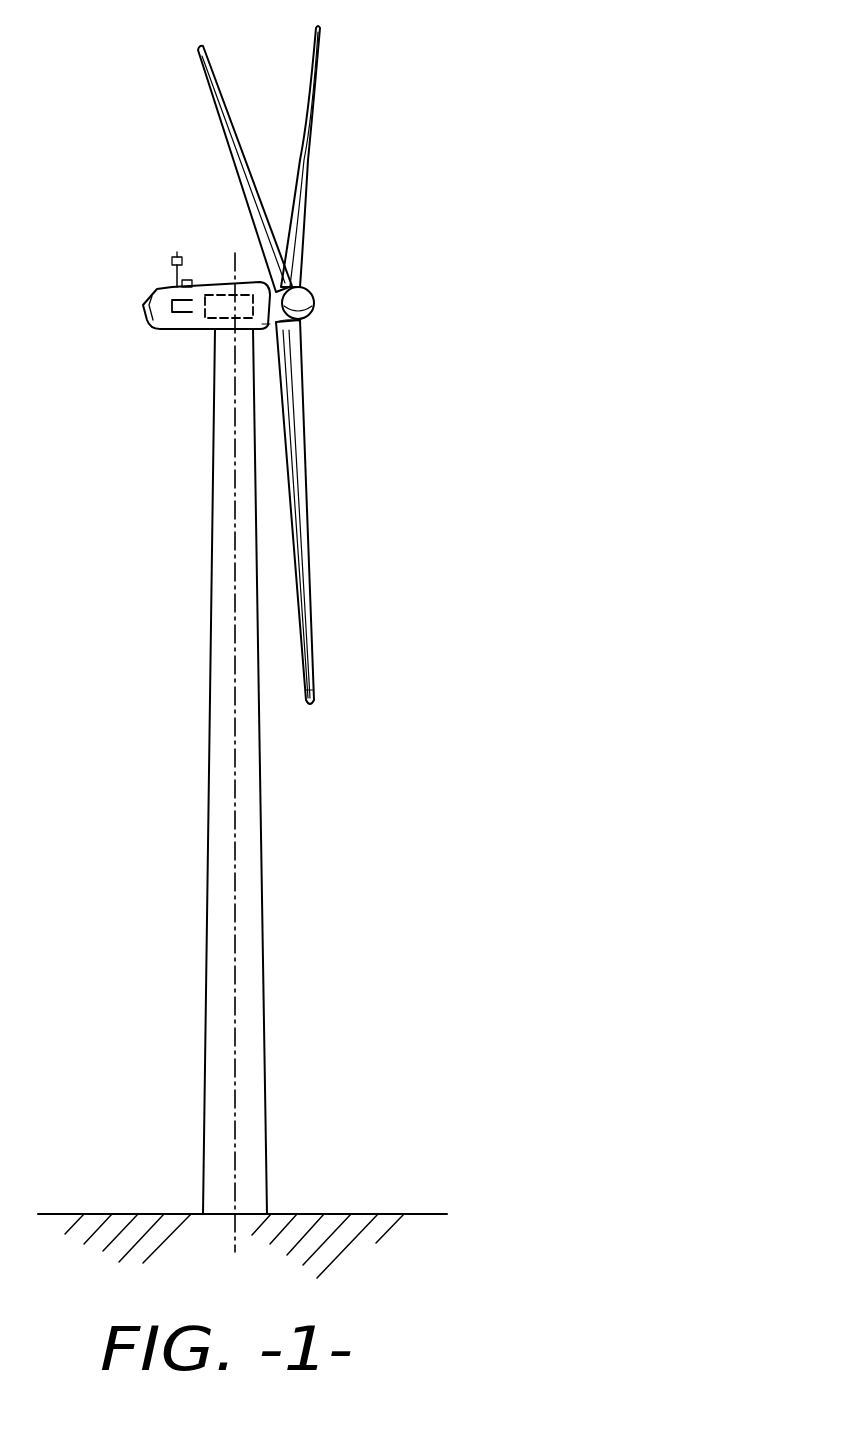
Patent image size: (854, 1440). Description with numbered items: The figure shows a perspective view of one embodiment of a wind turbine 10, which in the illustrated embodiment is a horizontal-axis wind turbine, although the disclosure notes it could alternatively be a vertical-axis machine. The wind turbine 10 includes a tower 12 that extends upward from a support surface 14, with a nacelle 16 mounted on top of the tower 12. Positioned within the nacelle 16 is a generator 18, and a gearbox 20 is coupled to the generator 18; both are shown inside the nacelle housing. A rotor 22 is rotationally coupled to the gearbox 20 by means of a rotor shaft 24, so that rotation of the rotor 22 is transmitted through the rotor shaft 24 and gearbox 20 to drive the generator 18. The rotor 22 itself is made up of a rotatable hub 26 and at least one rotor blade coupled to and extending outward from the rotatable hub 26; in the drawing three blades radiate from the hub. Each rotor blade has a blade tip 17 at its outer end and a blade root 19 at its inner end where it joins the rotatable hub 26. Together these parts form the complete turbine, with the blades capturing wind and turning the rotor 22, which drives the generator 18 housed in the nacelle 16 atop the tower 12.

The wind turbine 10 is at (444, 111).
The tower 12 is at (207, 883).
The support surface 14 is at (127, 1214).
The nacelle 16 is at (175, 332).
The blade tip 17 is at (317, 700).
The generator 18 is at (168, 283).
The blade root 19 is at (301, 333).
The gearbox 20 is at (222, 294).
The rotor 22 is at (322, 281).
The rotor shaft 24 is at (263, 328).
The rotatable hub 26 is at (315, 303).